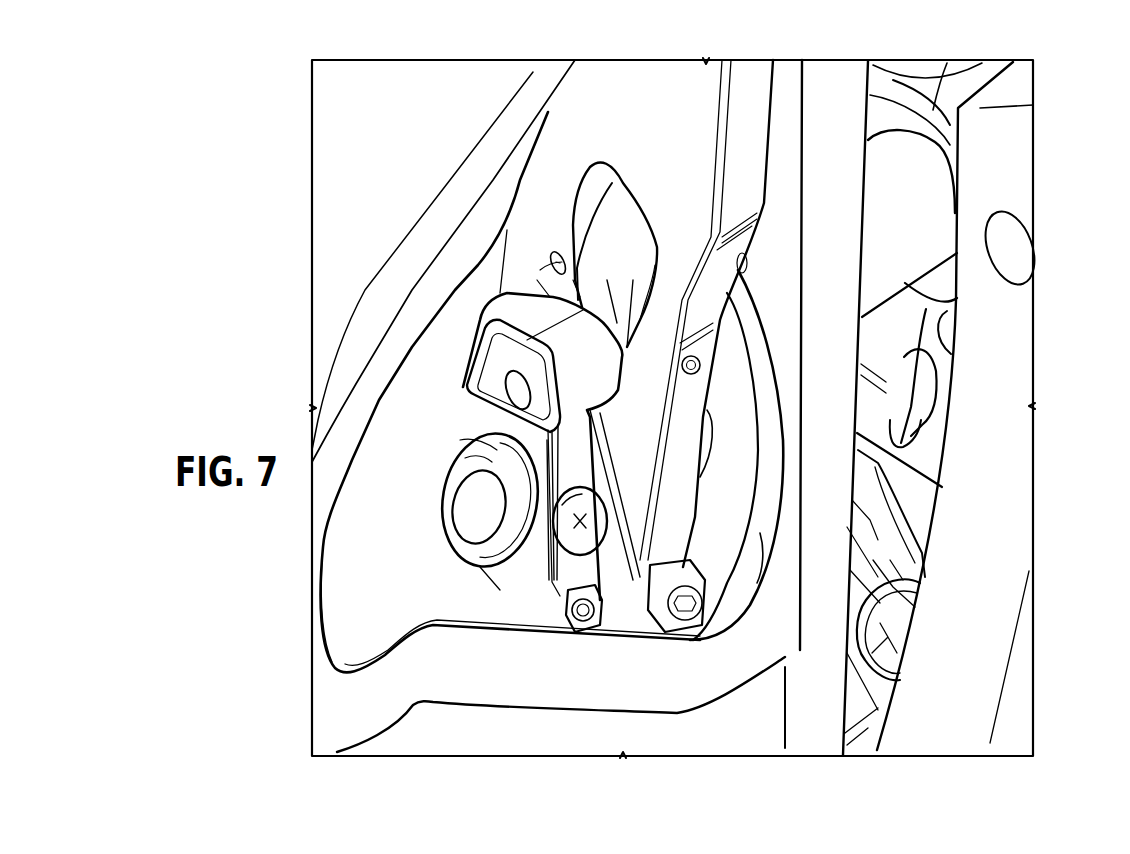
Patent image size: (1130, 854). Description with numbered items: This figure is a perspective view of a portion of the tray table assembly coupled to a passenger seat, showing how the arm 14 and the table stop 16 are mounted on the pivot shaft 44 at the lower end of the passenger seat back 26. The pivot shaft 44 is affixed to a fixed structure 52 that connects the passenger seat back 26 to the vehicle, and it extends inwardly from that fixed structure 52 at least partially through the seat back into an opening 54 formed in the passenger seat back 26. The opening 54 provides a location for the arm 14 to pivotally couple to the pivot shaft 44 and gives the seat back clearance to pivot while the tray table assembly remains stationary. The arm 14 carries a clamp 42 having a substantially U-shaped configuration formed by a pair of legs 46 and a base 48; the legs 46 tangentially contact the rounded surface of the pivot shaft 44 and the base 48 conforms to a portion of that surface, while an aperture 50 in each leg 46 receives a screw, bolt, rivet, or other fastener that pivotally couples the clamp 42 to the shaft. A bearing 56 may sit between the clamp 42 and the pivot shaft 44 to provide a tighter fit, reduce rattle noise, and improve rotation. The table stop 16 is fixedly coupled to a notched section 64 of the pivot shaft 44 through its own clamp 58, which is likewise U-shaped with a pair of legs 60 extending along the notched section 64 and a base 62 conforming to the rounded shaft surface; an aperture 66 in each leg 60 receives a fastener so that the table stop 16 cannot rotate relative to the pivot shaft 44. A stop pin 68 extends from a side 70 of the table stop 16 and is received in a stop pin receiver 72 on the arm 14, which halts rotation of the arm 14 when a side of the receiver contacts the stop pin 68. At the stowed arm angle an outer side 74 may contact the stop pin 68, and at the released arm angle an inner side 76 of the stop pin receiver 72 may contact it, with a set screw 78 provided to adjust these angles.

The arm 14 is at (597, 98).
The table stop 16 is at (458, 343).
The passenger seat back 26 is at (722, 677).
The clamp 42 is at (683, 513).
The pivot shaft 44 is at (907, 227).
The legs 46 is at (690, 487).
The base 48 is at (608, 418).
The aperture 50 is at (650, 640).
The fixed structure 52 is at (1006, 361).
The opening 54 is at (345, 565).
The bearing 56 is at (598, 605).
The clamp 58 is at (450, 423).
The legs 60 is at (556, 565).
The base 62 is at (485, 415).
The notched section 64 is at (527, 482).
The aperture 66 is at (565, 556).
The stop pin 68 is at (627, 312).
The side 70 is at (550, 280).
The stop pin receiver 72 is at (623, 220).
The outer side 74 is at (628, 320).
The inner side 76 is at (563, 255).
The set screw 78 is at (550, 262).